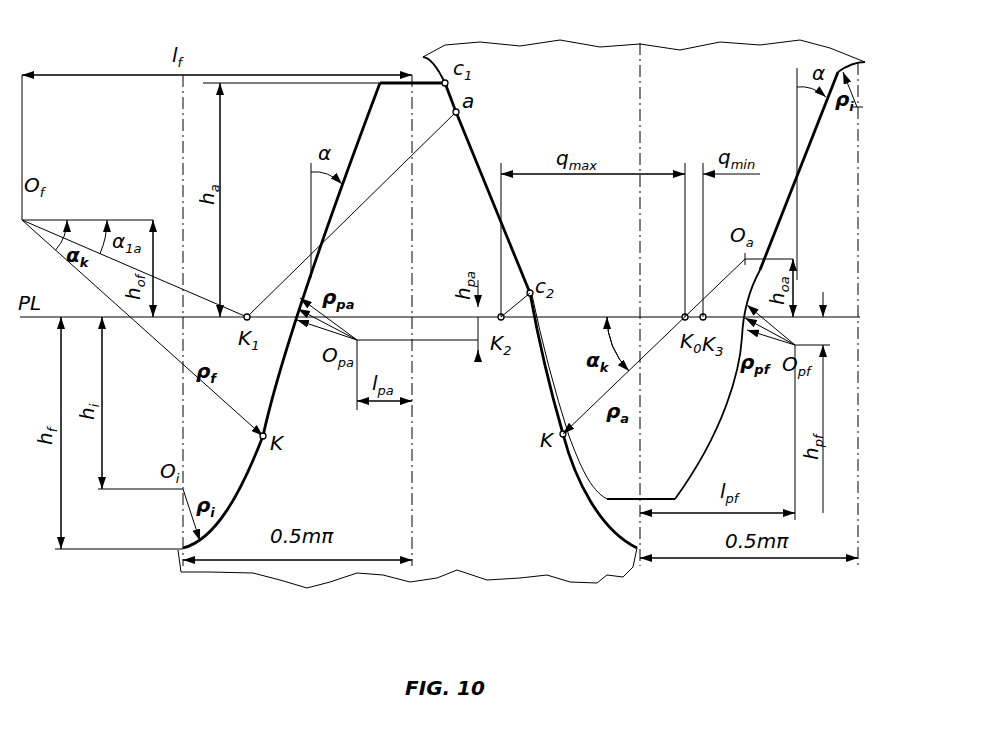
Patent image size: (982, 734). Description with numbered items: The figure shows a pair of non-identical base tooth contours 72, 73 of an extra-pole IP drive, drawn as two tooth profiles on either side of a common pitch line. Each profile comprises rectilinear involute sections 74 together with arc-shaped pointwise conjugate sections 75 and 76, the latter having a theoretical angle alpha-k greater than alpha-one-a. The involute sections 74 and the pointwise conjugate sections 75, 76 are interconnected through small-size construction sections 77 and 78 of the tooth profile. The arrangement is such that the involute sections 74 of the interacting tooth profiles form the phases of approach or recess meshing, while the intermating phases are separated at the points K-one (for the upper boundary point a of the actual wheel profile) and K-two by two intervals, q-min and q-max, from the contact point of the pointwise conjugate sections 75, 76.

The base tooth contour 72 is at (424, 80).
The base tooth contour 73 is at (638, 501).
The involute section 74 is at (366, 123).
The pointwise conjugate section 75 is at (592, 481).
The pointwise conjugate section 76 is at (588, 494).
The construction section 77 is at (544, 322).
The construction section 78 is at (536, 337).